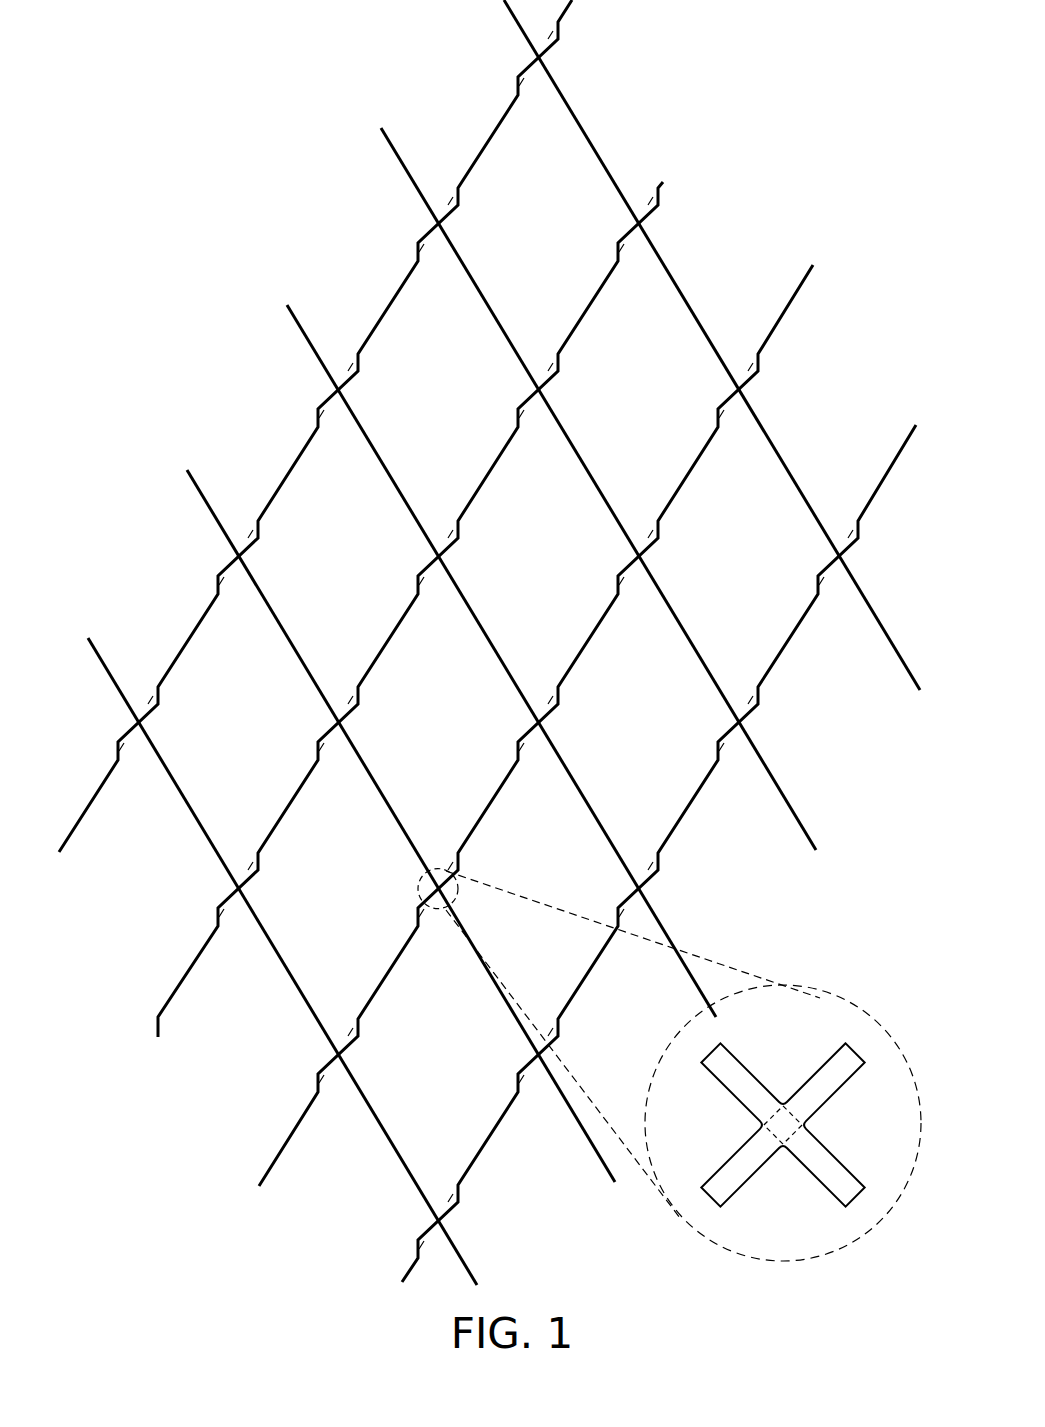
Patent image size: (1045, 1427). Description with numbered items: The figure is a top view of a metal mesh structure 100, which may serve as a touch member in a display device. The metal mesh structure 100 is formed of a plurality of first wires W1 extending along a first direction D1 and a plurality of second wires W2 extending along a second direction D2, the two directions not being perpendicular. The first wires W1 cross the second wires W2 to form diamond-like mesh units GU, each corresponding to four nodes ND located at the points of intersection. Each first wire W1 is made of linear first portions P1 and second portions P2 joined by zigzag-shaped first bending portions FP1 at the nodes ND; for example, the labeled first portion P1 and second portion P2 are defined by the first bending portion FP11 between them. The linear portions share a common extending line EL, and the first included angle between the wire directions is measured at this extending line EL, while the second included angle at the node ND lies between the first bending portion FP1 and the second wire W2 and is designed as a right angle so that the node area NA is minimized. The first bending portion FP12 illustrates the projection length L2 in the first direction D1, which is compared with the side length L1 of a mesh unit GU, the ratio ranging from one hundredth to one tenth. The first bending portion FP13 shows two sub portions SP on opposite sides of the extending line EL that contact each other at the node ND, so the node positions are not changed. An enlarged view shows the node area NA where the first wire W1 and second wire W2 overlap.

The metal mesh structure 100 is at (489, 647).
The mesh unit GU is at (503, 598).
The first wire W1 is at (107, 777).
The second wire W2 is at (470, 1270).
The first bending portion FP11 is at (418, 578).
The first bending portion FP12 is at (518, 410).
The first bending portion FP13 is at (619, 576).
The first bending portion FP1 is at (452, 493).
The extending line EL is at (554, 369).
The side length L1 is at (525, 367).
The projection length L2 is at (573, 364).
The first portion P1 is at (389, 641).
The second portion P2 is at (487, 478).
The sub portion SP is at (683, 553).
The node ND is at (437, 870).
The node area NA is at (783, 1104).
The first direction D1 is at (172, 1253).
The second direction D2 is at (172, 1253).